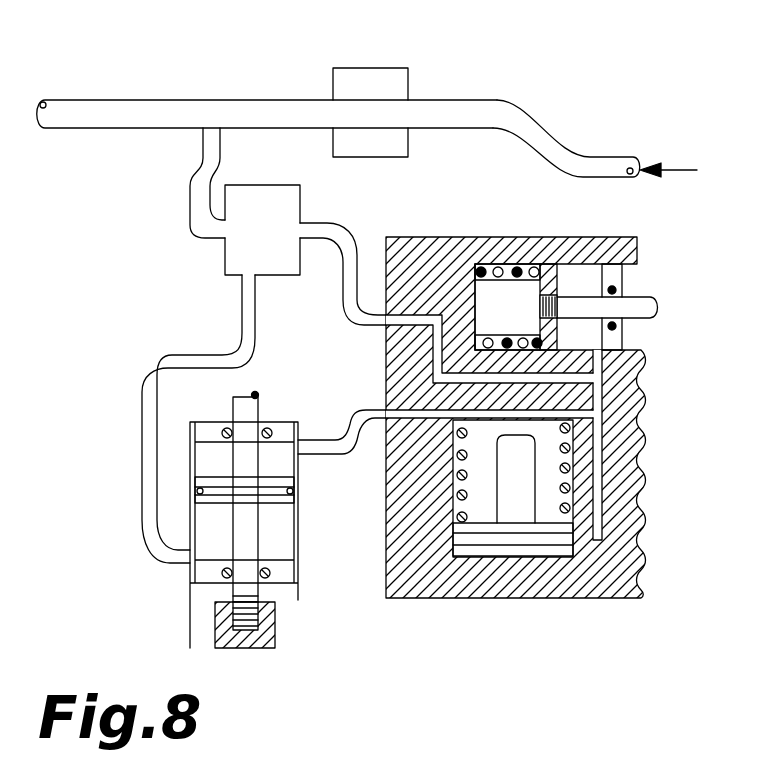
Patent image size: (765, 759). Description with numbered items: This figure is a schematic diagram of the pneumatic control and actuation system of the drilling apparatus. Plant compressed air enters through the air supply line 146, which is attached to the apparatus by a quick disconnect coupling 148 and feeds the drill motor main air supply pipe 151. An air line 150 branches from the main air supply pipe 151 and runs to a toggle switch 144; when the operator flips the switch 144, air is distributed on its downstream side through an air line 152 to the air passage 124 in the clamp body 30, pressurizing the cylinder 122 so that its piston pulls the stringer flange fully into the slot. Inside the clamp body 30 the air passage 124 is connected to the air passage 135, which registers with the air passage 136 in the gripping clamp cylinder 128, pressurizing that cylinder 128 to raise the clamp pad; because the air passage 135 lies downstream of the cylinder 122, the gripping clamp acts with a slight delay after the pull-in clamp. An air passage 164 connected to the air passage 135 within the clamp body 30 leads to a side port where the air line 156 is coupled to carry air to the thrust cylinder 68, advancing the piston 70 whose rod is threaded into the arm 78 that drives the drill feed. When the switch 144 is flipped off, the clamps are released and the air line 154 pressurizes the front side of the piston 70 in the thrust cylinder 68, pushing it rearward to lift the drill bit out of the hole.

The clamp body 30 is at (385, 342).
The thrust cylinder 68 is at (298, 545).
The piston 70 is at (487, 533).
The arm 78 is at (276, 638).
The cylinder 122 is at (522, 265).
The air passage 124 is at (431, 300).
The cylinder 128 is at (565, 475).
The air passage 135 is at (600, 398).
The air passage 136 is at (646, 440).
The toggle switch 144 is at (302, 194).
The air supply line 146 is at (547, 118).
The quick disconnect coupling 148 is at (389, 70).
The air line 150 is at (200, 163).
The drill motor main air supply pipe 151 is at (155, 99).
The air line 152 is at (356, 240).
The air line 154 is at (208, 353).
The air line 156 is at (343, 409).
The air passage 164 is at (440, 423).